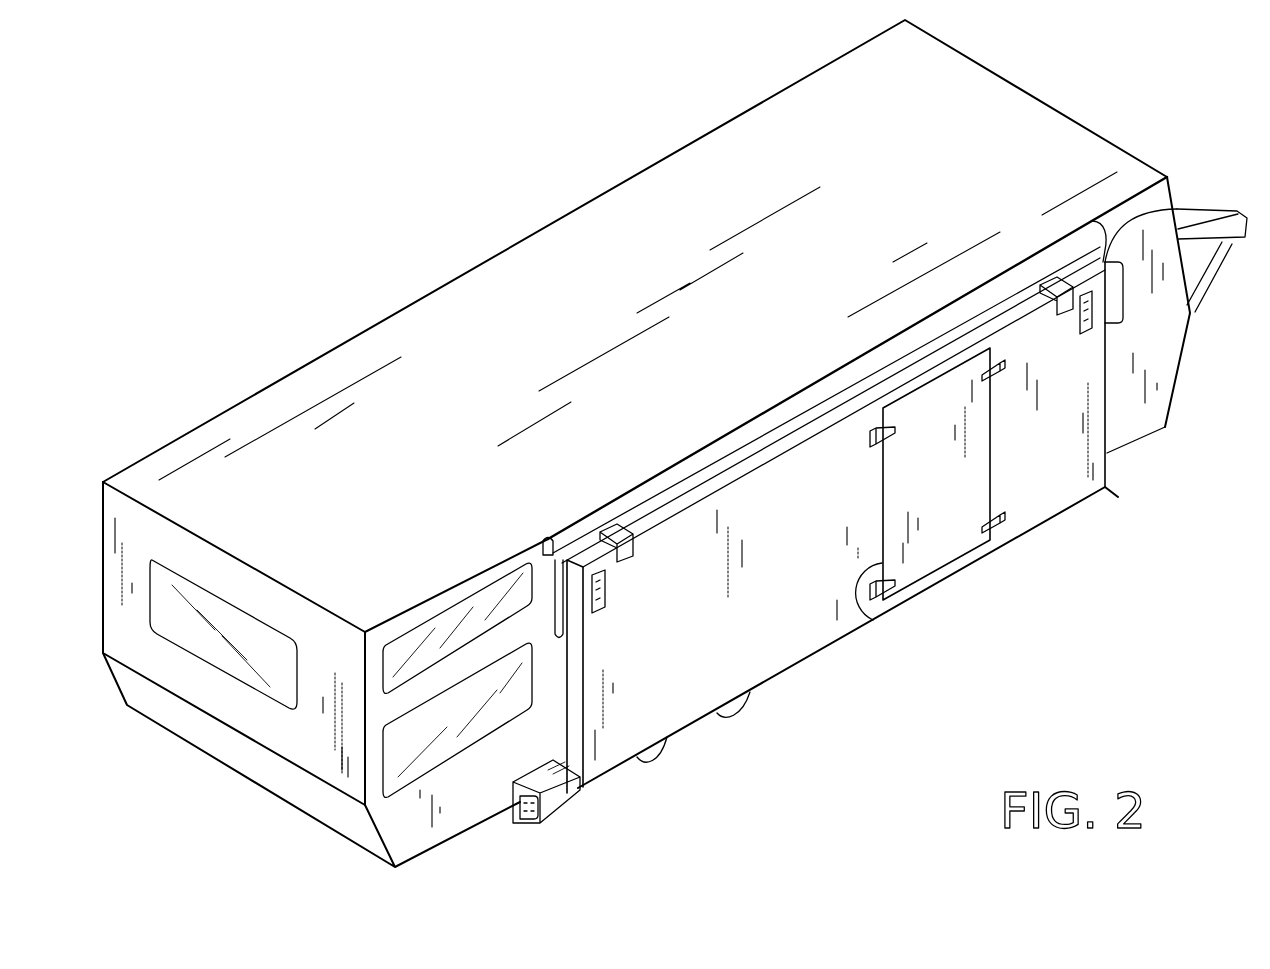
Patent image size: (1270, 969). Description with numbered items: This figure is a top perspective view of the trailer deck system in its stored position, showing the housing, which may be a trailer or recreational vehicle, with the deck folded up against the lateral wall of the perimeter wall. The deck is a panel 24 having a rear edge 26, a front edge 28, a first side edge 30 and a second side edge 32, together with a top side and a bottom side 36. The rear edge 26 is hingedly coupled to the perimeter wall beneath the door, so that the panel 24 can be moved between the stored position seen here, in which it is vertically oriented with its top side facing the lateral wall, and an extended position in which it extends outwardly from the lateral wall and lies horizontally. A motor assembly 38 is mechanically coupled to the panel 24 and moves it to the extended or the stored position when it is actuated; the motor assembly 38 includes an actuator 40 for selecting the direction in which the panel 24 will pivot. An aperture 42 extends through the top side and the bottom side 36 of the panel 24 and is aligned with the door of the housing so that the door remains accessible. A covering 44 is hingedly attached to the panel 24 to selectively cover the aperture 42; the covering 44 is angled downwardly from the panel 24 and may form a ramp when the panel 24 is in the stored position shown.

The panel 24 is at (1110, 497).
The rear edge 26 is at (820, 654).
The front edge 28 is at (1177, 209).
The first side edge 30 is at (573, 708).
The second side edge 32 is at (1107, 428).
The bottom side 36 is at (1050, 474).
The motor assembly 38 is at (560, 813).
The actuator 40 is at (515, 818).
The aperture 42 is at (878, 625).
The covering 44 is at (942, 550).